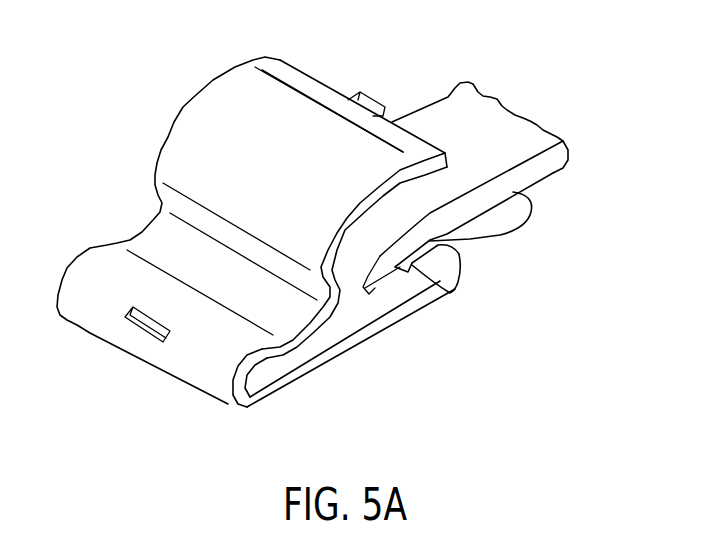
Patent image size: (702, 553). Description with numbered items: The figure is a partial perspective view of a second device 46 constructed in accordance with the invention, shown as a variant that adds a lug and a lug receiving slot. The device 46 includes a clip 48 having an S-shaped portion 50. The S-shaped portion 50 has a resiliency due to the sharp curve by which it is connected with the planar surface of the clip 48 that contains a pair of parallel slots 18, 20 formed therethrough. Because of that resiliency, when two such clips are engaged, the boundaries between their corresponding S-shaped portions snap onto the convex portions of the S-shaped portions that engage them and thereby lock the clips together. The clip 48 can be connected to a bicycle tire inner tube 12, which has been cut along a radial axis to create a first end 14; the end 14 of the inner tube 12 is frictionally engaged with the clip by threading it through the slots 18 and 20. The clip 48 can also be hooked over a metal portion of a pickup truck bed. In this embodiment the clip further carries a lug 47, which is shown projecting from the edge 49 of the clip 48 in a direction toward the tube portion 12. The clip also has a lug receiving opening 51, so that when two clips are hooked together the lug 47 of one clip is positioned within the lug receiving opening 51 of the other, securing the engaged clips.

The bicycle tire inner tube 12 is at (448, 98).
The first end 14 is at (532, 208).
The slot 18 is at (380, 297).
The slot 20 is at (413, 270).
The second device 46 is at (375, 73).
The lug 47 is at (375, 98).
The clip 48 is at (257, 400).
The edge 49 is at (308, 73).
The S-shaped portion 50 is at (168, 148).
The lug receiving opening 51 is at (137, 320).